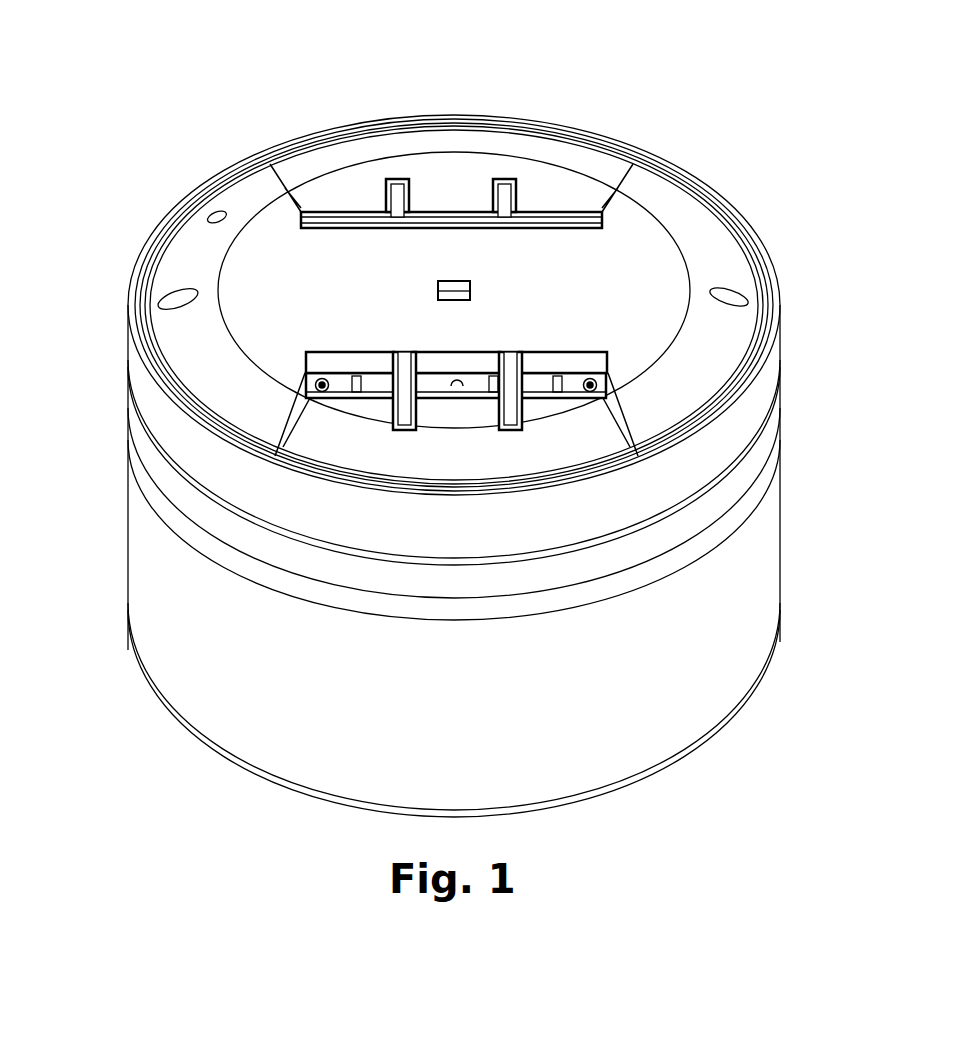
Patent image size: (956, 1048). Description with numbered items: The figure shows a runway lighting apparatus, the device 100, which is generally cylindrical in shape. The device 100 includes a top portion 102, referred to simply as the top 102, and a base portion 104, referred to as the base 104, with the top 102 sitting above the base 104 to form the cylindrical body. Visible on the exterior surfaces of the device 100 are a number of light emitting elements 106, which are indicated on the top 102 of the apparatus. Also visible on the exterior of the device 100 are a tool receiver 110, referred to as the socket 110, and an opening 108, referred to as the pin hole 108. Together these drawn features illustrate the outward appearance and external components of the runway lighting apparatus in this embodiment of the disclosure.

The device 100 is at (600, 54).
The top portion 102 is at (777, 352).
The base portion 104 is at (764, 567).
The light emitting elements 106 is at (555, 337).
The opening 108 is at (214, 210).
The tool receiver 110 is at (453, 281).